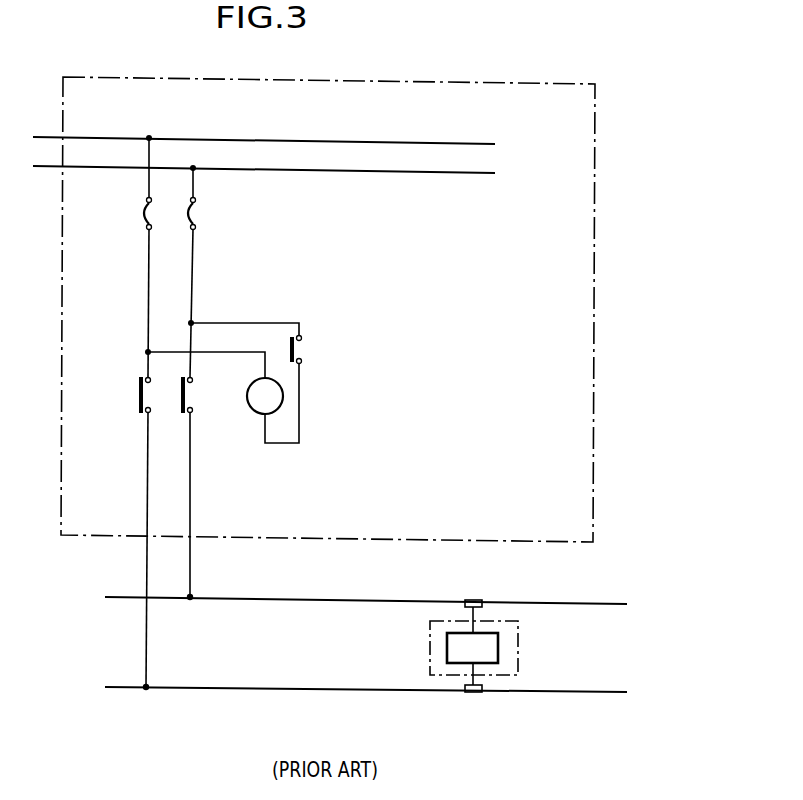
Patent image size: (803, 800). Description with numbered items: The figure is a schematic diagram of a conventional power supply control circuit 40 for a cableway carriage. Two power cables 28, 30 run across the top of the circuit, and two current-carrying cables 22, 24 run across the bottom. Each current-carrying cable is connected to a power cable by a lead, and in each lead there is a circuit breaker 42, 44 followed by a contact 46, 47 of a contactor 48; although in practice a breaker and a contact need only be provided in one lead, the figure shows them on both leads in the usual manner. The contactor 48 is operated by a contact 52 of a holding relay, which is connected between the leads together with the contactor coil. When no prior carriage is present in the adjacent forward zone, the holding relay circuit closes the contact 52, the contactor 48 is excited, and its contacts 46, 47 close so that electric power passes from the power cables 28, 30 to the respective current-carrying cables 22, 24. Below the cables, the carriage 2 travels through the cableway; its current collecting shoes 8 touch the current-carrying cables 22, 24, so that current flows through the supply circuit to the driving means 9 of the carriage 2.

The power supply control circuit 40 is at (462, 82).
The power cable 30 is at (300, 139).
The power cable 28 is at (305, 173).
The circuit breaker 44 is at (142, 213).
The circuit breaker 42 is at (189, 213).
The contact of contactor 47 is at (143, 388).
The contact of contactor 46 is at (186, 388).
The contact of holding relay 52 is at (302, 345).
The contactor 48 is at (283, 396).
The current-carrying cable 22 is at (365, 600).
The current-carrying cable 24 is at (390, 692).
The carriage 2 is at (474, 648).
The driving means 9 is at (447, 648).
The current collecting shoe 8 is at (478, 600).